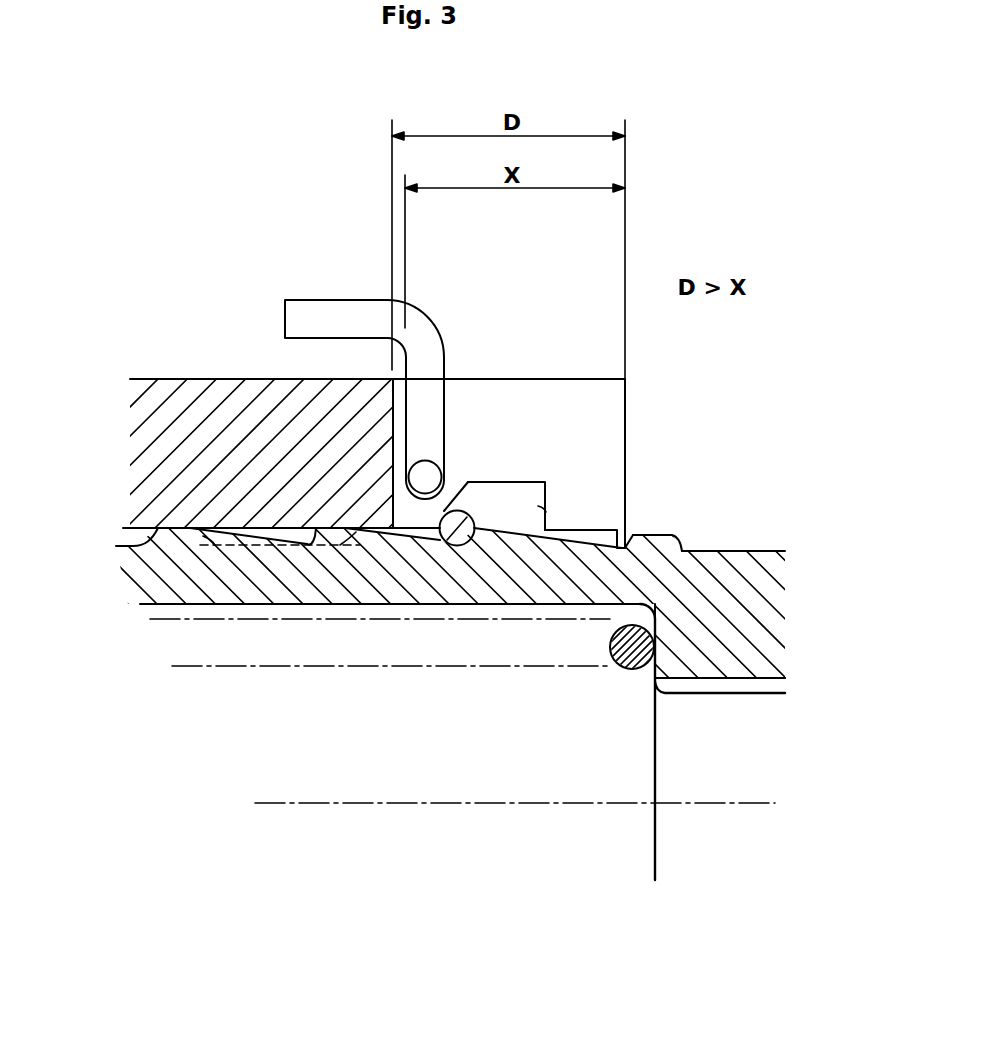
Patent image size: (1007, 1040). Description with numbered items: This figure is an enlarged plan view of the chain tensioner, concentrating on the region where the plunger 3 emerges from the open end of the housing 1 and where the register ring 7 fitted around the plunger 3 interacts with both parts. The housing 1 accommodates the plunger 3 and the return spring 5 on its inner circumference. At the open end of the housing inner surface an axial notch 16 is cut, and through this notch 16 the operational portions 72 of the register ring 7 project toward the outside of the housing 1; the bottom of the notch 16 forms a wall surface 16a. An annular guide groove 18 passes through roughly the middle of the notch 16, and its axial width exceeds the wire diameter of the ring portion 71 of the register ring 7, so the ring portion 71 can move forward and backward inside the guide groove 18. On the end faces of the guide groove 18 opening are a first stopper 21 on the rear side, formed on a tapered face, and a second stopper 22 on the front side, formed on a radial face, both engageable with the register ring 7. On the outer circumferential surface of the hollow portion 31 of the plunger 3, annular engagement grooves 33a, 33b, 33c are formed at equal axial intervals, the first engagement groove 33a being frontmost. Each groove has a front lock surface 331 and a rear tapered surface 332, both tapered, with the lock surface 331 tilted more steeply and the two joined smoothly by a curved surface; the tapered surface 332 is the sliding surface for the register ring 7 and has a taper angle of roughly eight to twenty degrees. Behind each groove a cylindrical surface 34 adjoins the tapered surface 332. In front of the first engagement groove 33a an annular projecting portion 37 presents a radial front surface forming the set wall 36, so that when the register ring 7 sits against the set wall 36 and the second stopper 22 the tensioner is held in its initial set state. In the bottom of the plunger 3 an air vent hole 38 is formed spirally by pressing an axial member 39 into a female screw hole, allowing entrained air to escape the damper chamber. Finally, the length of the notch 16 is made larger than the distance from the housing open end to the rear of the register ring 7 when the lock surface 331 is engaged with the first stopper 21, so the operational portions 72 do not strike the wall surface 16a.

The housing 1 is at (275, 379).
The plunger 3 is at (760, 549).
The return spring 5 is at (618, 670).
The register ring 7 is at (315, 299).
The notch 16 is at (600, 410).
The wall surface 16a is at (403, 405).
The guide groove 18 is at (491, 482).
The first stopper 21 is at (452, 546).
The second stopper 22 is at (538, 506).
The hollow portion 31 is at (145, 585).
The first engagement groove 33a is at (585, 545).
The second engagement groove 33b is at (412, 536).
The third engagement groove 33c is at (209, 531).
The lock surface 331 is at (305, 527).
The tapered surface 332 is at (232, 527).
The cylindrical surface 34 is at (163, 527).
The set wall 36 is at (688, 540).
The annular projecting portion 37 is at (646, 533).
The air vent hole 38 is at (735, 687).
The axial member 39 is at (740, 780).
The ring portion 71 is at (452, 510).
The operational portions 72 is at (424, 333).